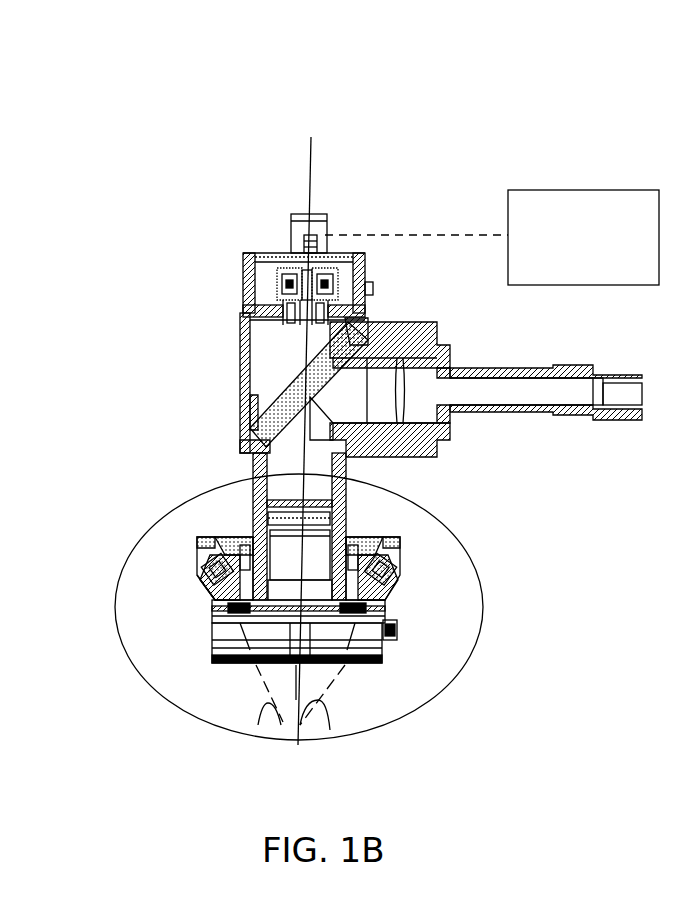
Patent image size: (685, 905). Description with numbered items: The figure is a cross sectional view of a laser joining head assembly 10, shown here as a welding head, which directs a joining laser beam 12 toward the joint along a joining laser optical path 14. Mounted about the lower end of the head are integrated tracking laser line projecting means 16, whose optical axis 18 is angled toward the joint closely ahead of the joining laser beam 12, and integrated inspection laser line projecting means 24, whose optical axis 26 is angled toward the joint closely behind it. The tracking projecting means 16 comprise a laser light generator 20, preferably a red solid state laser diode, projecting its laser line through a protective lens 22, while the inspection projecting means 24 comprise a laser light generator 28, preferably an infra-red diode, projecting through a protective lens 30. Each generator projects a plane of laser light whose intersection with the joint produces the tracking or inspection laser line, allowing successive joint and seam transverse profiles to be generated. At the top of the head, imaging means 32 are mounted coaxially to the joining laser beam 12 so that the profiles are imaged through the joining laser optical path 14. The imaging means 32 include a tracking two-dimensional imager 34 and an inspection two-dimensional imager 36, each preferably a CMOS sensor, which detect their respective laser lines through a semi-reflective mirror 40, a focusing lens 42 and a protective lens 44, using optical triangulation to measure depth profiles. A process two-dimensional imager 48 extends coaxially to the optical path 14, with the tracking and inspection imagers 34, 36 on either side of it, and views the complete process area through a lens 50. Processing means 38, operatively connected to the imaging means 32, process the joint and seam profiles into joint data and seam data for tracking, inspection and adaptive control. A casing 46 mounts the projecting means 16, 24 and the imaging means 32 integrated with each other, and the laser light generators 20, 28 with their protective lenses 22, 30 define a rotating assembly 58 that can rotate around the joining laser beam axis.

The laser joining head assembly 10 is at (382, 74).
The joining laser beam 12 is at (296, 700).
The joining laser optical path 14 is at (263, 465).
The tracking laser line projecting means 16 is at (410, 548).
The optical axis 18 is at (330, 730).
The laser light generator 20 is at (393, 583).
The protective lens 22 is at (380, 628).
The inspection laser line projecting means 24 is at (186, 541).
The optical axis 26 is at (258, 725).
The laser light generator 28 is at (210, 587).
The protective lens 30 is at (217, 625).
The imaging means 32 is at (240, 264).
The tracking 2D imager 34 is at (340, 257).
The inspection 2D imager 36 is at (289, 268).
The processing means 38 is at (591, 190).
The semi-reflective mirror 40 is at (368, 322).
The focusing lens 42 is at (332, 503).
The protective lens 44 is at (336, 520).
The casing 46 is at (240, 384).
The process 2-D imager 48 is at (327, 215).
The lens 50 is at (316, 240).
The rotating assembly 58 is at (466, 688).